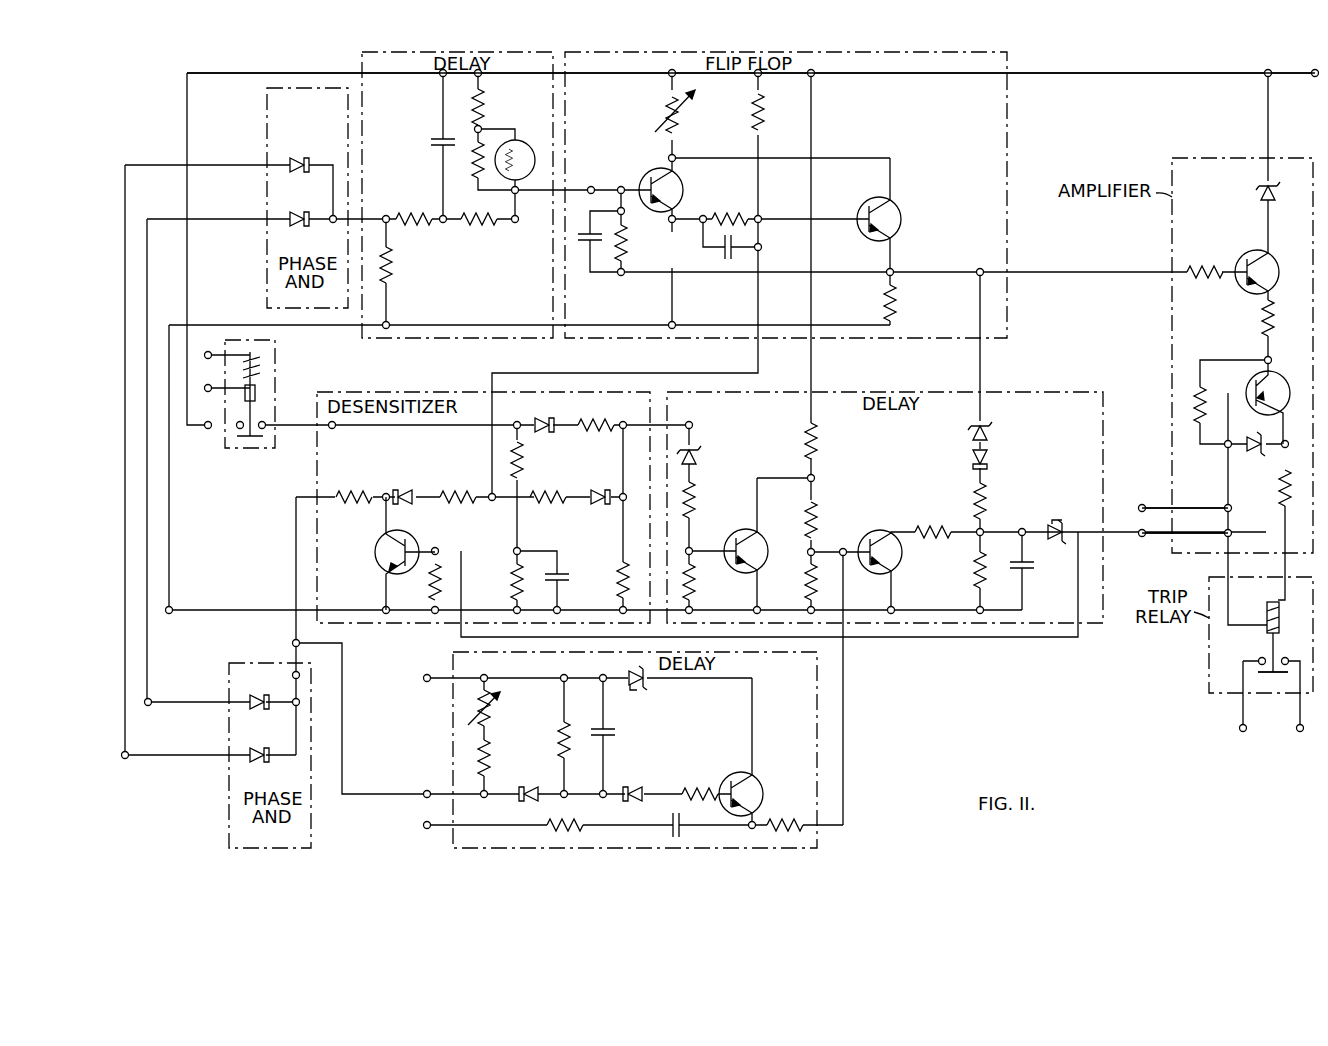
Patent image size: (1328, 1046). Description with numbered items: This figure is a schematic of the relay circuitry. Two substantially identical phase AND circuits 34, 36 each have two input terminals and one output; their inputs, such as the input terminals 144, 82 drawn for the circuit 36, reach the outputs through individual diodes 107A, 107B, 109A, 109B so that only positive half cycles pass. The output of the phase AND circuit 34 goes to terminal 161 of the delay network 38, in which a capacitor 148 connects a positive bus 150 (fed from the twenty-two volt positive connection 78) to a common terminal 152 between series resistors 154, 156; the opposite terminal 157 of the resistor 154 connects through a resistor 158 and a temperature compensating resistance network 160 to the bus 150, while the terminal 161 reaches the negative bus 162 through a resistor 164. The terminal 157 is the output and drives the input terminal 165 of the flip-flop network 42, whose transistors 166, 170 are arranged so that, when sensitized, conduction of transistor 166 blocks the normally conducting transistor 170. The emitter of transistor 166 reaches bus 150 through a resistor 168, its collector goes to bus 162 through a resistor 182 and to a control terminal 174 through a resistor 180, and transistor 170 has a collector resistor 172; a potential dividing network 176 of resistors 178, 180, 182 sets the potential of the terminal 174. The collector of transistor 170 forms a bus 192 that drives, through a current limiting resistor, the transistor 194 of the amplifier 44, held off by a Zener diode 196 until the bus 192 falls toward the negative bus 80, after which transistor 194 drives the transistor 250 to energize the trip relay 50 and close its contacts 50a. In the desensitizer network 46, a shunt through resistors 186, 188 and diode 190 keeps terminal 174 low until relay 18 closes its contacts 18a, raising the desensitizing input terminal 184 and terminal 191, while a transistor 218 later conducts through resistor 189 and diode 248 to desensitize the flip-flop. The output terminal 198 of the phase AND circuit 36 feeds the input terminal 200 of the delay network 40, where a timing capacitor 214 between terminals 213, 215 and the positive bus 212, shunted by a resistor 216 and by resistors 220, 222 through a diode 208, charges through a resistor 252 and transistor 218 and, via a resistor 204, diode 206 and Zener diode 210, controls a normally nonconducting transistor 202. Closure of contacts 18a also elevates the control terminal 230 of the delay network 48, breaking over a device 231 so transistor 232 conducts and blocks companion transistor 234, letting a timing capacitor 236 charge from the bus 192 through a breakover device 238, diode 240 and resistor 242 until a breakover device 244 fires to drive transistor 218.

The relay 18 is at (250, 448).
The relay contacts 18a is at (232, 430).
The phase AND circuit 34 is at (267, 270).
The phase AND circuit 36 is at (229, 816).
The delay network 38 is at (362, 63).
The delay network 40 is at (453, 735).
The flip-flop network 42 is at (1007, 150).
The amplifier 44 is at (1200, 158).
The desensitizer network 46 is at (434, 392).
The delay network 48 is at (1054, 392).
The trip relay 50 is at (1220, 693).
The trip relay contacts 50a is at (1262, 657).
The positive connection 78 is at (1315, 77).
The negative bus 80 is at (1140, 506).
The input terminal 82 is at (127, 753).
The diode 107A is at (298, 158).
The diode 107B is at (298, 212).
The diode 109A is at (258, 748).
The diode 109B is at (258, 695).
The input terminal 144 is at (150, 700).
The capacitor 148 is at (434, 142).
The positive bus 150 is at (612, 76).
The common terminal 152 is at (440, 215).
The resistor 154 is at (481, 226).
The resistor 156 is at (414, 226).
The output terminal 157 is at (517, 200).
The resistor 158 is at (486, 110).
The temperature compensating resistance network 160 is at (490, 140).
The input terminal 161 is at (386, 210).
The negative bus 162 is at (521, 325).
The resistor 164 is at (392, 286).
The input terminal 165 is at (591, 187).
The transistor 166 is at (652, 168).
The resistor 168 is at (660, 112).
The transistor 170 is at (896, 192).
The resistor 172 is at (900, 303).
The control terminal 174 is at (760, 219).
The potential dividing network 176 is at (720, 188).
The resistor 178 is at (748, 115).
The resistor 180 is at (752, 230).
The resistor 182 is at (648, 235).
The desensitizing input terminal 184 is at (334, 429).
The resistor 186 is at (546, 494).
The resistor 188 is at (618, 580).
The resistor 189 is at (456, 502).
The diode 190 is at (597, 502).
The terminal 191 is at (620, 494).
The bus 192 is at (937, 272).
The transistor 194 is at (1246, 256).
The Zener diode 196 is at (1256, 190).
The output terminal 198 is at (292, 641).
The input terminal 200 is at (425, 792).
The transistor 202 is at (755, 781).
The resistor 204 is at (686, 789).
The diode 206 is at (634, 789).
The diode 208 is at (529, 789).
The Zener diode 210 is at (646, 683).
The positive bus 212 is at (487, 676).
The terminal 213 is at (604, 798).
The timing capacitor 214 is at (616, 732).
The terminal 215 is at (603, 676).
The resistor 216 is at (560, 735).
The transistor 218 is at (378, 546).
The resistor 220 is at (500, 716).
The resistor 222 is at (495, 760).
The control terminal 230 is at (693, 425).
The breakover device 231 is at (700, 458).
The transistor 232 is at (737, 534).
The transistor 234 is at (868, 534).
The timing capacitor 236 is at (1038, 574).
The voltage breakover device 238 is at (998, 432).
The diode 240 is at (996, 461).
The resistor 242 is at (1000, 496).
The voltage breakover device 244 is at (1060, 524).
The diode 248 is at (418, 492).
The transistor 250 is at (1250, 378).
The resistor 252 is at (352, 491).